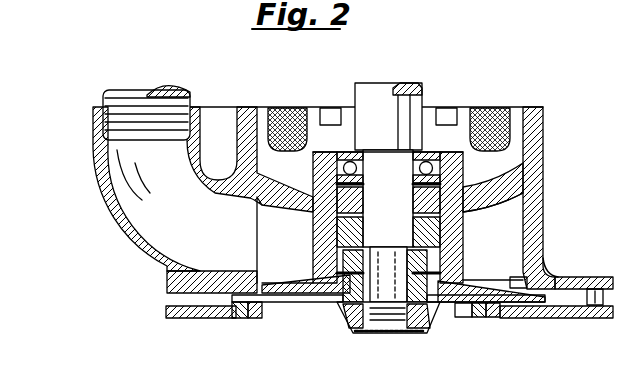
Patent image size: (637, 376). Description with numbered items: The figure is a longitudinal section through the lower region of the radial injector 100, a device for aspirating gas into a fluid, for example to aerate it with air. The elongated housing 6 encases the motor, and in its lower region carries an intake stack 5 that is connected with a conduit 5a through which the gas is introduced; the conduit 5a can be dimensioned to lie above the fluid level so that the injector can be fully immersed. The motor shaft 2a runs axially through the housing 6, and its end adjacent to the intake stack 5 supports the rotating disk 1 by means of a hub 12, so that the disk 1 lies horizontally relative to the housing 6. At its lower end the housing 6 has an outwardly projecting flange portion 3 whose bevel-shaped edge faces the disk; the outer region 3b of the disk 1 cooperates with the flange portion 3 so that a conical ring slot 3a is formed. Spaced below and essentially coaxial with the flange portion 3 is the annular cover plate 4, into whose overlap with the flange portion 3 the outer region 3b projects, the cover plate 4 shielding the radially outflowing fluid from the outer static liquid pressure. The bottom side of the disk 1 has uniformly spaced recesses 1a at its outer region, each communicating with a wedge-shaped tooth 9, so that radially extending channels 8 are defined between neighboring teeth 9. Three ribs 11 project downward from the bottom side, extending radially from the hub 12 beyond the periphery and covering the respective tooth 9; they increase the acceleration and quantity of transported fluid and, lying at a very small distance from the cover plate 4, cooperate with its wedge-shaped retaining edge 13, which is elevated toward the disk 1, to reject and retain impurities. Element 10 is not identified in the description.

The radial injector 100 is at (484, 80).
The rotating disk 1 is at (319, 302).
The recesses 1a is at (541, 263).
The shaft 2a is at (404, 207).
The flange portion 3 is at (567, 275).
The ring slot 3a is at (261, 283).
The outer region 3b is at (247, 280).
The cover plate 4 is at (193, 318).
The intake stack 5 is at (120, 218).
The conduit 5a is at (105, 98).
The housing 6 is at (546, 168).
The channels 8 is at (511, 303).
The wedge-shaped tooth 9 is at (233, 318).
The seal 10 is at (520, 281).
The ribs 11 is at (471, 302).
The hub 12 is at (452, 256).
The retaining edge 13 is at (257, 318).